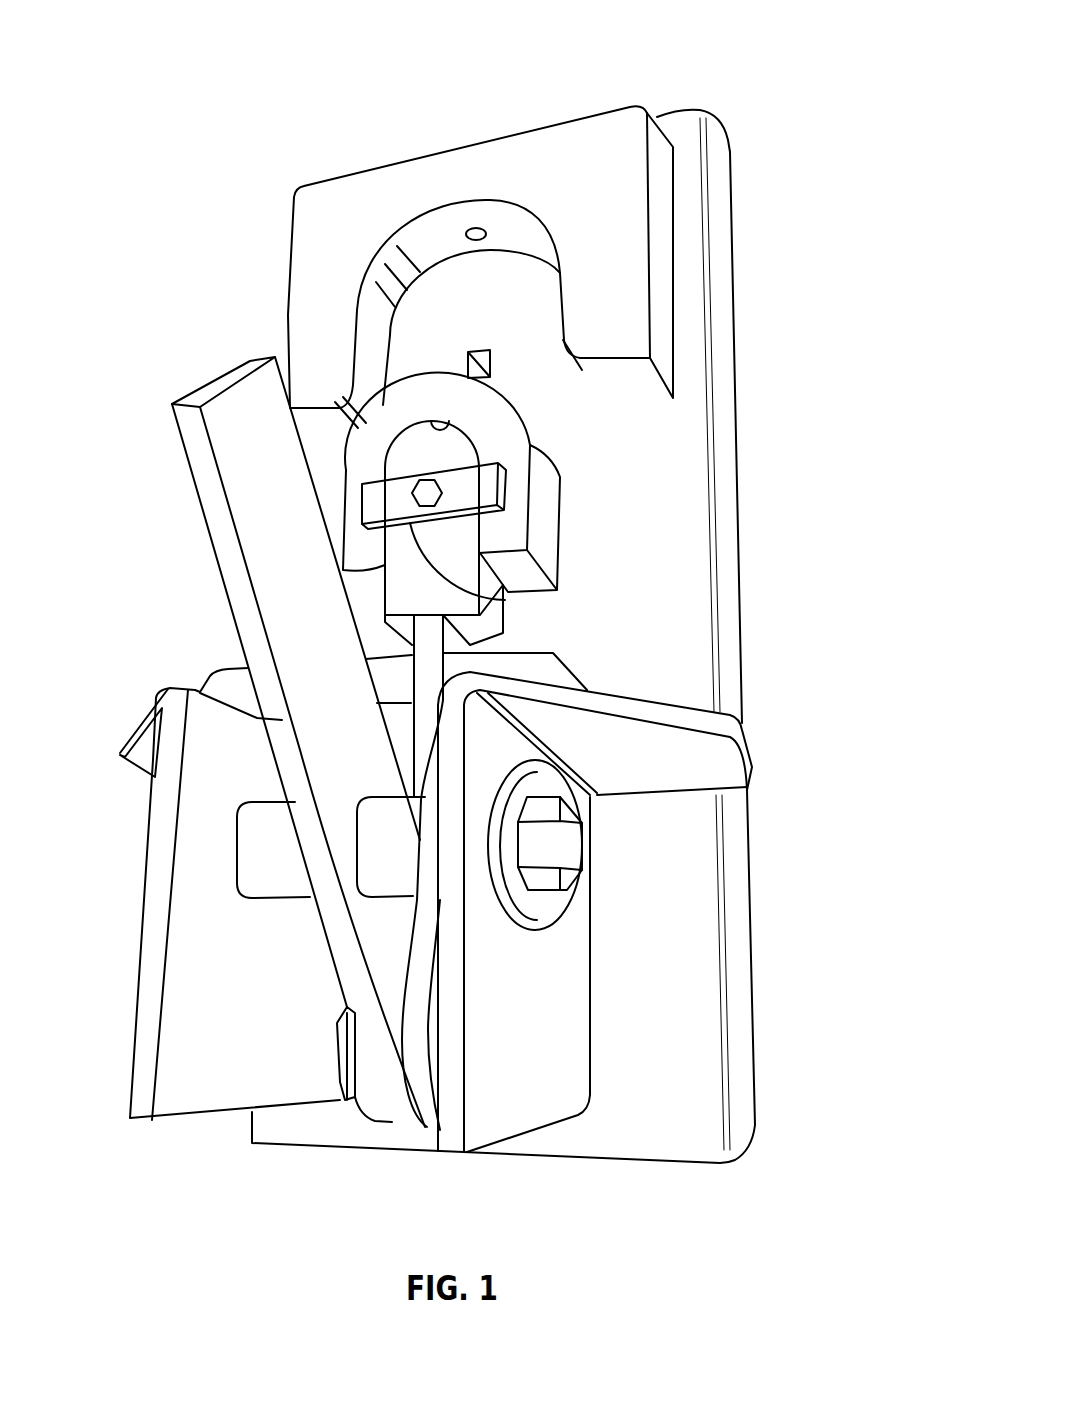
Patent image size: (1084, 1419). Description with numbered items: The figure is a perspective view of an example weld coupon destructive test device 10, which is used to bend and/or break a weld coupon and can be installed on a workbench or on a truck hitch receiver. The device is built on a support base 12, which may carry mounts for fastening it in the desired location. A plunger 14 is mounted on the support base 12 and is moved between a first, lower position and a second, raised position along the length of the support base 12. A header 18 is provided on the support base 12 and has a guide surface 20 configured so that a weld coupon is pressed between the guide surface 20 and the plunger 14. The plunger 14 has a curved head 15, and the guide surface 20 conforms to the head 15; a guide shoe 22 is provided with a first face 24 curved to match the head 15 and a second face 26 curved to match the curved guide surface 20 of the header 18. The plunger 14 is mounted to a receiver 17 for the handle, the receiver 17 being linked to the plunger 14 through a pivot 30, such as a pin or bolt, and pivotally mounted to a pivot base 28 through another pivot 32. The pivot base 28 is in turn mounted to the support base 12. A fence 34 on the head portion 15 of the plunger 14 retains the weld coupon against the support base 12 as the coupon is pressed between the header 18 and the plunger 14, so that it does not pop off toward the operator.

The weld coupon destructive test device 10 is at (778, 112).
The support base 12 is at (750, 691).
The plunger 14 is at (405, 679).
The curved head 15 is at (508, 629).
The receiver 17 is at (200, 502).
The header 18 is at (534, 125).
The guide surface 20 is at (443, 228).
The guide shoe 22 is at (567, 512).
The first face 24 is at (439, 430).
The second face 26 is at (543, 465).
The pivot base 28 is at (538, 1018).
The pivot 30 is at (340, 1097).
The pivot 32 is at (572, 847).
The fence 34 is at (507, 602).